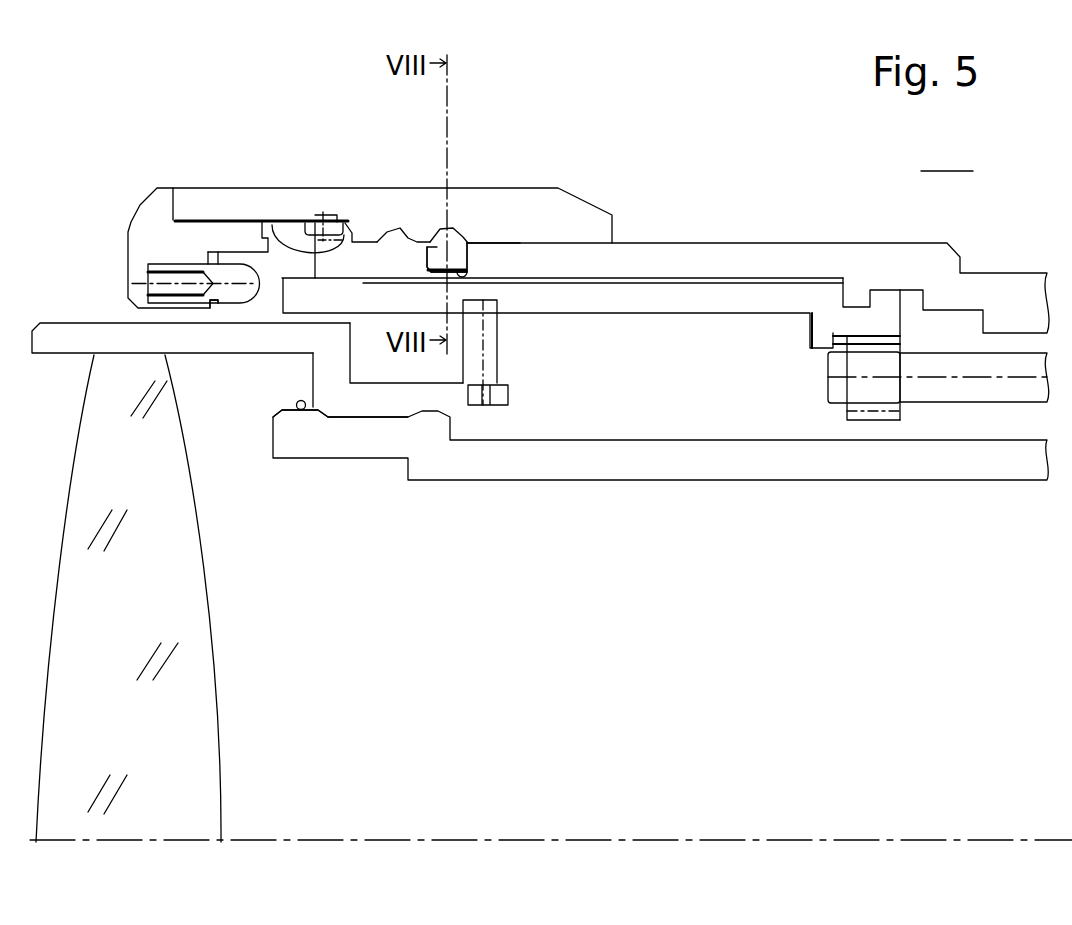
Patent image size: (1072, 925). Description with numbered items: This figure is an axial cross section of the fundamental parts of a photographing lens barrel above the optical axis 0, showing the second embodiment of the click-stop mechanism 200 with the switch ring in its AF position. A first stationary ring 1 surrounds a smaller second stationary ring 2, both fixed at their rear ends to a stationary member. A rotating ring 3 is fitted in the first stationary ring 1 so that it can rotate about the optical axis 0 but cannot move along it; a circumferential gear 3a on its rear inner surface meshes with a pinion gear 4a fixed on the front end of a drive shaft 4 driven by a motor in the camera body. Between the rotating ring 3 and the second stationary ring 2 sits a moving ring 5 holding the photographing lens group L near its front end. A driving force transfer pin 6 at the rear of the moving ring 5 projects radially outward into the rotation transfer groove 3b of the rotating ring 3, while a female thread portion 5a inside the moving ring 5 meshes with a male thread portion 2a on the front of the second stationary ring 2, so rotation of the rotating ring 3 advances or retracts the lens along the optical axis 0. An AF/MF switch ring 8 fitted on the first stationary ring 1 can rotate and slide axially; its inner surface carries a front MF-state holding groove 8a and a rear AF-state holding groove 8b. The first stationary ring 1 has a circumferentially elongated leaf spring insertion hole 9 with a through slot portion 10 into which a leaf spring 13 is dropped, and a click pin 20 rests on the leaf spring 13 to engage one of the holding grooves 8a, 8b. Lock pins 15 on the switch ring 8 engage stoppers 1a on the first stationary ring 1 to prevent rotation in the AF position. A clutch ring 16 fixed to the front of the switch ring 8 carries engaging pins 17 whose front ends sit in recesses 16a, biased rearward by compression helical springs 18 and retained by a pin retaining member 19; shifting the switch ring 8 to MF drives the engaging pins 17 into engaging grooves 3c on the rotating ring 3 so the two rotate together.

The click-stop mechanism (second embodiment) 200 is at (947, 156).
The first stationary ring 1 is at (738, 260).
The stoppers 1a is at (268, 220).
The second stationary ring 2 is at (665, 477).
The male thread portion 2a is at (303, 412).
The rotating ring 3 is at (673, 298).
The circumferential gear 3a is at (840, 342).
The rotation transfer groove 3b is at (538, 305).
The engaging grooves 3c is at (297, 285).
The drive shaft 4 is at (1010, 390).
The pinion gear 4a is at (873, 418).
The moving ring 5 is at (58, 325).
The female thread portion 5a is at (368, 412).
The driving force transfer pin 6 is at (490, 370).
The AF/MF switch ring 8 is at (580, 220).
The MF-state holding groove 8a is at (388, 232).
The AF-state holding groove 8b is at (470, 243).
The leaf spring insertion hole 9 is at (447, 257).
The through slot portion 10 is at (435, 250).
The leaf spring 13 is at (468, 268).
The pins (lock pins) 15 is at (298, 222).
The clutch ring 16 is at (144, 220).
The recesses 16a is at (150, 267).
The engaging pins 17 is at (232, 278).
The compression helical springs 18 is at (172, 296).
The pin retaining member 19 is at (212, 305).
The click pin 20 is at (468, 241).
The photographing lens group L is at (188, 678).
The optical axis 0 is at (453, 830).